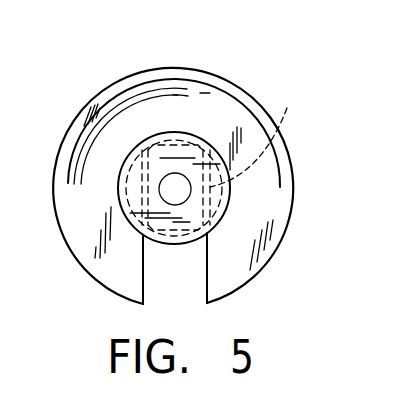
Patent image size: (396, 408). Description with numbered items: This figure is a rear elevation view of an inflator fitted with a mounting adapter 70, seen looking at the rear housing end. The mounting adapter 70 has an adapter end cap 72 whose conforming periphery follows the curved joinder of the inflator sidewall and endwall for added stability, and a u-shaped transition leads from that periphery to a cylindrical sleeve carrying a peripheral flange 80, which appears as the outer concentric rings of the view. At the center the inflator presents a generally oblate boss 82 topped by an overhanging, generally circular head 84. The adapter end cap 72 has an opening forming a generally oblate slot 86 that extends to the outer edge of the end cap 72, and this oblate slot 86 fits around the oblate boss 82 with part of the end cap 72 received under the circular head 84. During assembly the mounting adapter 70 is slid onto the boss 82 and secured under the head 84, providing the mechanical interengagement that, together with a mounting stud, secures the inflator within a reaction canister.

The mounting adapter 70 is at (312, 239).
The adapter end cap 72 is at (92, 148).
The peripheral flange 80 is at (140, 72).
The boss 82 is at (258, 131).
The circular head 84 is at (168, 132).
The oblate slot 86 is at (206, 283).